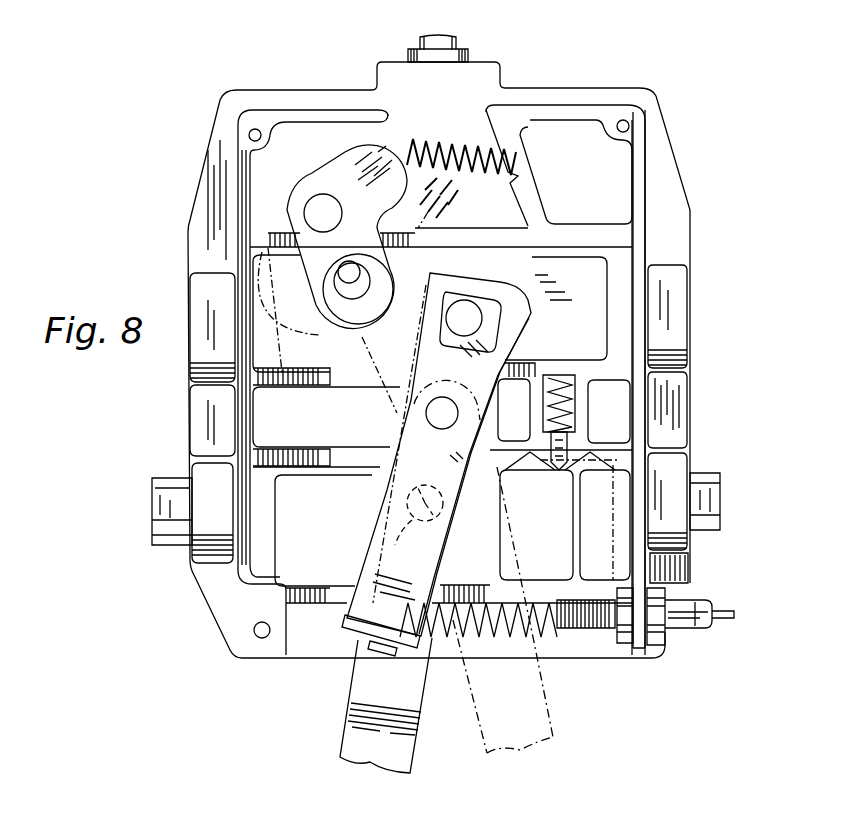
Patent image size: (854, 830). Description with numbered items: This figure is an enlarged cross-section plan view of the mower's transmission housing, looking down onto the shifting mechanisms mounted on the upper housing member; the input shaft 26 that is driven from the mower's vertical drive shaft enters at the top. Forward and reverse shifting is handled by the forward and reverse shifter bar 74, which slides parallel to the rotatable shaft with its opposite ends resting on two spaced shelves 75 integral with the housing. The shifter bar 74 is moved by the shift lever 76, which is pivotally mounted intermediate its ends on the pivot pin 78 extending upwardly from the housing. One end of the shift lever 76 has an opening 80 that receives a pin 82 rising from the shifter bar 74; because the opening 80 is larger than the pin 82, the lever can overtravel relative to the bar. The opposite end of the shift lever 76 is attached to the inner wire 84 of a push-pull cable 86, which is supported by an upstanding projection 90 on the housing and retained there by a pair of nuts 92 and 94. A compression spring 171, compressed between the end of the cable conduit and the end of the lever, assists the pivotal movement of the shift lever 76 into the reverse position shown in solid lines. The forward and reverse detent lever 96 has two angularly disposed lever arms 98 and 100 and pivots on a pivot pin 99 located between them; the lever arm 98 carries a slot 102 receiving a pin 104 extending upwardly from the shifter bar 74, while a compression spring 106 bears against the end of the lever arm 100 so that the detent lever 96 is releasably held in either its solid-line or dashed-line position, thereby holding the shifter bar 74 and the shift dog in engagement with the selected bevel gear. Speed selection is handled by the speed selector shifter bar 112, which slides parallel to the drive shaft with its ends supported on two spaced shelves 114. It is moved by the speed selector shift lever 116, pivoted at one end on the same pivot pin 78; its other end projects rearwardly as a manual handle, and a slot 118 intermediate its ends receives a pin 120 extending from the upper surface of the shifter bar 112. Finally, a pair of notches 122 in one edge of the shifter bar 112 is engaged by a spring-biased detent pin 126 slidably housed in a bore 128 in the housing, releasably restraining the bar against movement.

The input shaft 26 is at (416, 48).
The forward and reverse shifter bar 74 is at (592, 276).
The shelves 75 is at (715, 302).
The shift lever 76 is at (372, 556).
The pivot pin 78 is at (437, 413).
The opening 80 is at (495, 325).
The pin 82 is at (468, 312).
The inner wire 84 is at (730, 612).
The push-pull cable 86 is at (693, 622).
The projection 90 is at (641, 642).
The nut 92 is at (656, 594).
The nut 94 is at (625, 640).
The forward and reverse detent lever 96 is at (345, 160).
The lever arm 98 is at (358, 308).
The pivot pin 99 is at (312, 198).
The lever arm 100 is at (385, 150).
The slot 102 is at (355, 272).
The pin 104 is at (370, 283).
The compression spring 106 is at (468, 145).
The speed selector shifter bar 112 is at (345, 502).
The shelves 114 is at (263, 477).
The speed selector shift lever 116 is at (362, 681).
The slot 118 is at (419, 526).
The pin 120 is at (446, 420).
The notches 122 is at (523, 477).
The detent pin 126 is at (563, 440).
The bore 128 is at (567, 373).
The compression spring 171 is at (500, 637).